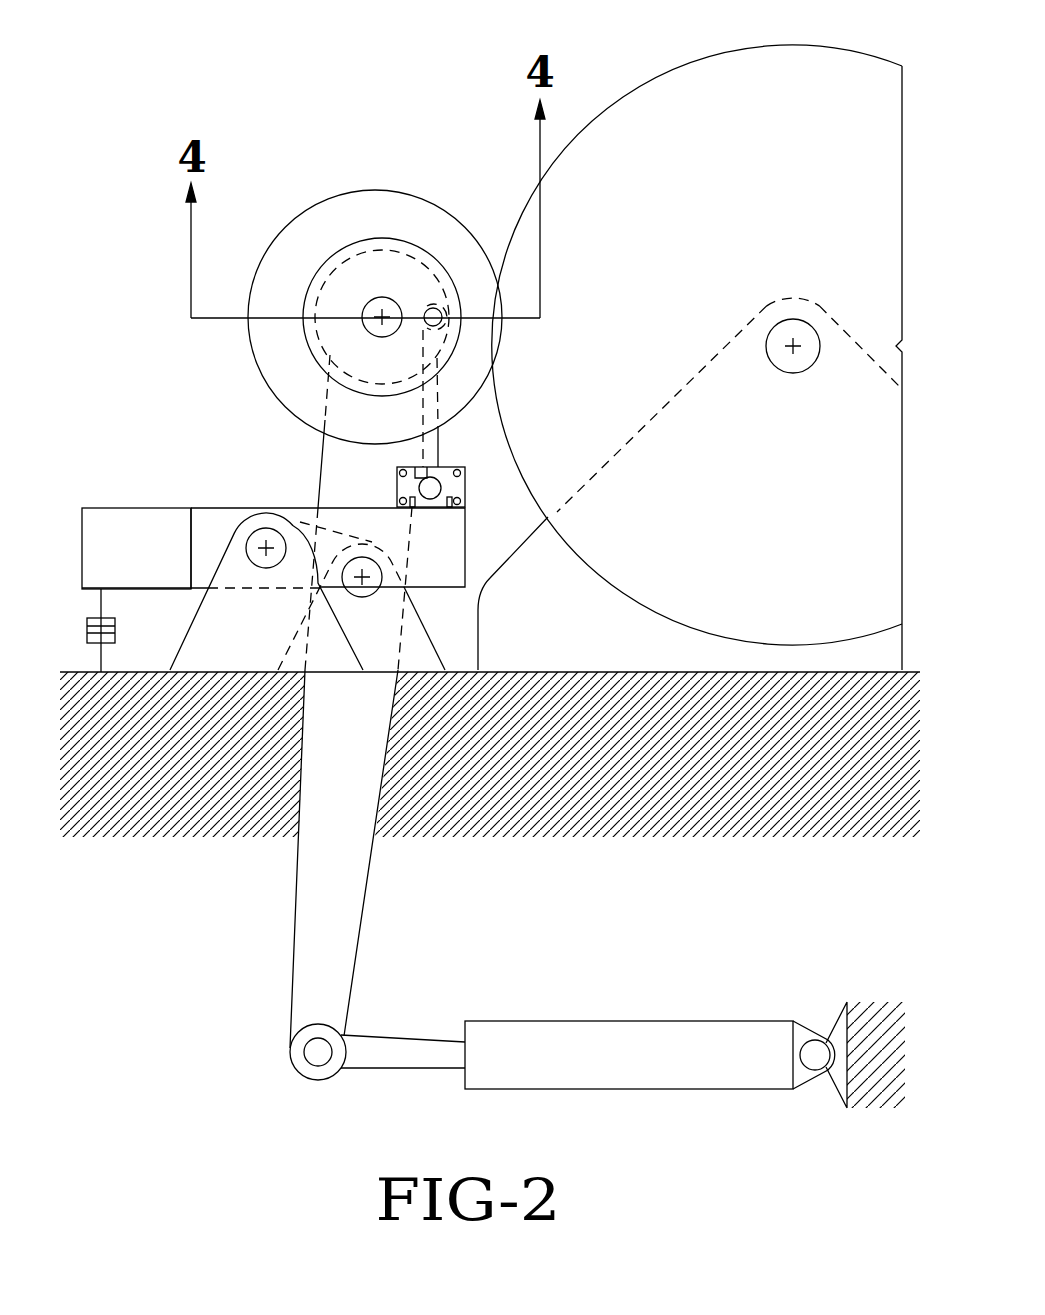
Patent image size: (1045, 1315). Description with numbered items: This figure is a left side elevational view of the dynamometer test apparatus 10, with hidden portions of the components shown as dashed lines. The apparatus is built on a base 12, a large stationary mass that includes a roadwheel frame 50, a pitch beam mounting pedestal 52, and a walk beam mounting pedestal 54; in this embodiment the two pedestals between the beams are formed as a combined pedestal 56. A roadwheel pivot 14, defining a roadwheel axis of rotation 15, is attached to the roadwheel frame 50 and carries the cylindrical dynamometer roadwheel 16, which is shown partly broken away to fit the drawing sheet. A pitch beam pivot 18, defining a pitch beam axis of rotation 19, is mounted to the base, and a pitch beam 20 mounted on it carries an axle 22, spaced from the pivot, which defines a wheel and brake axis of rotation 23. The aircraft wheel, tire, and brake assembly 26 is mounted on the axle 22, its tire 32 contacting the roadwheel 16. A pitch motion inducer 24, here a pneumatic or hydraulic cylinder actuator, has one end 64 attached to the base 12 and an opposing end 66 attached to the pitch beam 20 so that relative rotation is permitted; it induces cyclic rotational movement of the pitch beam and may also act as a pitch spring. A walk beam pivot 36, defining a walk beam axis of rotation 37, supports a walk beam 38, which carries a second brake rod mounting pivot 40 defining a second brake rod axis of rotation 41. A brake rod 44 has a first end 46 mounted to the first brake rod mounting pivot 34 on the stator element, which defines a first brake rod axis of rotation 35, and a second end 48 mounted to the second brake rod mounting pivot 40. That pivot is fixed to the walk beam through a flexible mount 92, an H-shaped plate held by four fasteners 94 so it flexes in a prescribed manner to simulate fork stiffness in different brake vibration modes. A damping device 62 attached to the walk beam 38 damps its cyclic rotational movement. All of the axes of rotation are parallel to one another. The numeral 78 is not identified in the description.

The dynamometer test apparatus 10 is at (410, 72).
The base 12 is at (530, 758).
The roadwheel pivot 14 is at (800, 362).
The roadwheel axis of rotation 15 is at (793, 346).
The dynamometer roadwheel 16 is at (780, 173).
The pitch beam pivot 18 is at (362, 597).
The pitch beam axis of rotation 19 is at (365, 570).
The pitch beam 20 is at (330, 786).
The axle 22 is at (382, 317).
The wheel and brake axis of rotation 23 is at (381, 320).
The pitch motion inducer 24 is at (575, 1066).
The aircraft wheel, tire, and brake assembly 26 is at (280, 400).
The tire 32 is at (352, 200).
The first brake rod mounting pivot 34 is at (410, 347).
The first brake rod axis of rotation 35 is at (432, 316).
The walk beam pivot 36 is at (258, 530).
The walk beam axis of rotation 37 is at (262, 550).
The walk beam 38 is at (422, 560).
The second brake rod mounting pivot 40 is at (443, 470).
The second brake rod axis of rotation 41 is at (433, 490).
The brake rod 44 is at (432, 453).
The first end 46 is at (450, 292).
The second end 48 is at (433, 515).
The roadwheel frame 50 is at (520, 625).
The pitch beam mounting pedestal 52 is at (420, 647).
The walk beam mounting pedestal 54 is at (220, 643).
The combined pedestal 56 is at (305, 521).
The damping device 62 is at (87, 637).
The one end 64 is at (798, 1077).
The opposing end 66 is at (318, 1080).
The housing 78 is at (137, 525).
The flexible mount 92 is at (397, 488).
The fasteners 94 is at (458, 501).